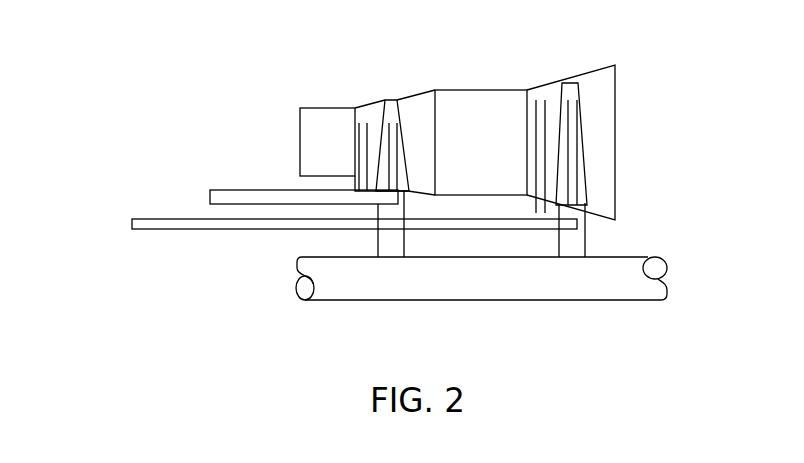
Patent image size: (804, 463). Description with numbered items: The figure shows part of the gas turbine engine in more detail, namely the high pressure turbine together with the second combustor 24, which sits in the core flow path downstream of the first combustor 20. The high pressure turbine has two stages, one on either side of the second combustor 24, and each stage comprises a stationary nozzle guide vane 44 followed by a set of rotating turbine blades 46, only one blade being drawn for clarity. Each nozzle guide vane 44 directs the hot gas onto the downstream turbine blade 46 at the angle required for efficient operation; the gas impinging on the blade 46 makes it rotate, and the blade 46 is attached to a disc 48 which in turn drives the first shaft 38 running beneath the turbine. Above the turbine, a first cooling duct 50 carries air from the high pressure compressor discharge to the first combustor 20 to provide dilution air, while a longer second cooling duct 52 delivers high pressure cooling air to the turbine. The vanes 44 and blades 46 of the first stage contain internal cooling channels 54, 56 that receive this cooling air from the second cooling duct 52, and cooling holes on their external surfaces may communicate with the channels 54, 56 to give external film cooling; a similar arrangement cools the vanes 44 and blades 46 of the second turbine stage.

The first combustor 20 is at (305, 108).
The second combustor 24 is at (472, 90).
The first shaft 38 is at (527, 300).
The nozzle guide vane 44 is at (367, 106).
The turbine blade 46 is at (390, 100).
The disc 48 is at (376, 237).
The first cooling duct 50 is at (210, 190).
The second cooling duct 52 is at (132, 220).
The internal cooling channel 54 is at (363, 147).
The internal cooling channel 56 is at (400, 147).